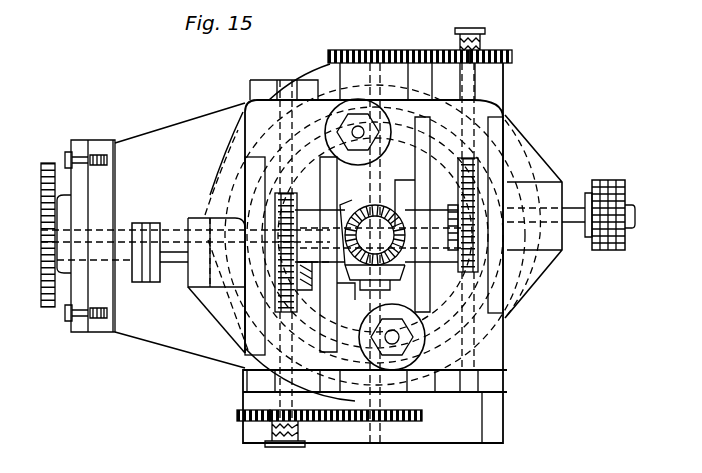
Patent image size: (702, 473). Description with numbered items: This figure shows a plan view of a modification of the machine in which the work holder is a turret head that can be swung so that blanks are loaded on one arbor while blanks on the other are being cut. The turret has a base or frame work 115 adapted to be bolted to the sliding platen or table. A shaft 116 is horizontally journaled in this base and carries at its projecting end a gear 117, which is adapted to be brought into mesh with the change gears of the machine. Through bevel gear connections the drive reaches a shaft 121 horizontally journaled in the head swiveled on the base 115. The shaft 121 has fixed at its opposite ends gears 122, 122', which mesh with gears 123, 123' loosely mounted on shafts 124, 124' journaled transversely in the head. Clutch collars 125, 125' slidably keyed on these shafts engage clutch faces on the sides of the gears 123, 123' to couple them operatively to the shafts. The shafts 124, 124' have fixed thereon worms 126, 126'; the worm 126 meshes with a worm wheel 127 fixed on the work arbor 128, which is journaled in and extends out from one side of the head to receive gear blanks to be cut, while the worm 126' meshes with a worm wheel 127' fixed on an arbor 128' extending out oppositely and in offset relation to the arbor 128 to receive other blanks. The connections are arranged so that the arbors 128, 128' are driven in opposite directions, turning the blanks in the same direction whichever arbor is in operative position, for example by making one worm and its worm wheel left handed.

The base or frame work 115 is at (186, 346).
The shaft 116 is at (162, 231).
The gear 117 is at (43, 290).
The shaft 121 is at (381, 381).
The gear 122 is at (346, 426).
The gear 122' is at (399, 46).
The gear 123 is at (238, 425).
The gear 123' is at (502, 49).
The shaft 124 is at (281, 261).
The shaft 124' is at (508, 206).
The clutch collar 125 is at (283, 444).
The clutch collar 125' is at (481, 34).
The worm 126 is at (312, 275).
The worm 126' is at (493, 227).
The worm wheel 127 is at (232, 251).
The worm wheel 127' is at (512, 216).
The work arbor 128 is at (198, 259).
The arbor 128' is at (578, 238).